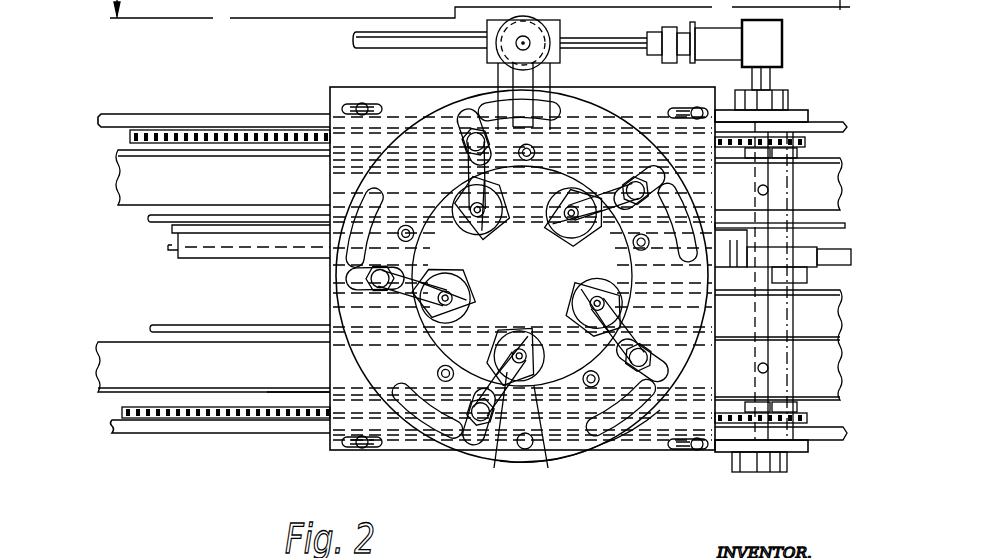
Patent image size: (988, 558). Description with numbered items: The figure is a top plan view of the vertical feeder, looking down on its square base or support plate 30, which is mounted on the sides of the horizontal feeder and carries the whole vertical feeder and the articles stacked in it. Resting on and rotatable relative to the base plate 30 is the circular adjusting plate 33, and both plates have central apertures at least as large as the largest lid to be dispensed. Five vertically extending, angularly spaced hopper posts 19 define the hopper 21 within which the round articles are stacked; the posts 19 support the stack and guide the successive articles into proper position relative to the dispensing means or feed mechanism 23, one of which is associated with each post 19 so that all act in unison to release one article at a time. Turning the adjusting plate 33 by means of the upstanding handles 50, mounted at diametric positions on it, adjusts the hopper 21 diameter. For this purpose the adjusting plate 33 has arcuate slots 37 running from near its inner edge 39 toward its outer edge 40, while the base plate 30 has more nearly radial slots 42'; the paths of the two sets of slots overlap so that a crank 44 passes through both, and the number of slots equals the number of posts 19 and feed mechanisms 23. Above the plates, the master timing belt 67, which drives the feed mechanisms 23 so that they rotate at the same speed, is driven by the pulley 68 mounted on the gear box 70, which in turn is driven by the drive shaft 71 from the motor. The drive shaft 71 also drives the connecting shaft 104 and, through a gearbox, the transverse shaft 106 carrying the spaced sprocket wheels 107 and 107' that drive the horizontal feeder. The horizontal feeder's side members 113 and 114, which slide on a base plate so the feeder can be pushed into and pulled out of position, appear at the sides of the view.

The hopper post 19 is at (489, 435).
The hopper 21 is at (522, 276).
The dispensing means or feed mechanism 23 is at (468, 314).
The base or support plate 30 is at (398, 441).
The adjusting plate 33 is at (433, 435).
The arcuate slot 37 is at (622, 451).
The inner edge of plate 33 39 is at (547, 465).
The outer edge of plate 33 40 is at (567, 459).
The arcuate slot 42' is at (467, 408).
The crank 44 is at (654, 331).
The upstanding handle 50 is at (525, 450).
The master timing belt 67 is at (549, 85).
The pulley 68 is at (548, 36).
The gear box 70 is at (563, 56).
The drive shaft 71 is at (651, 40).
The connecting shaft 104 is at (777, 80).
The shaft 106 is at (753, 212).
The sprocket wheel 107 is at (780, 464).
The sprocket wheel 107' is at (788, 111).
The side member 113 is at (202, 122).
The side member 114 is at (223, 433).